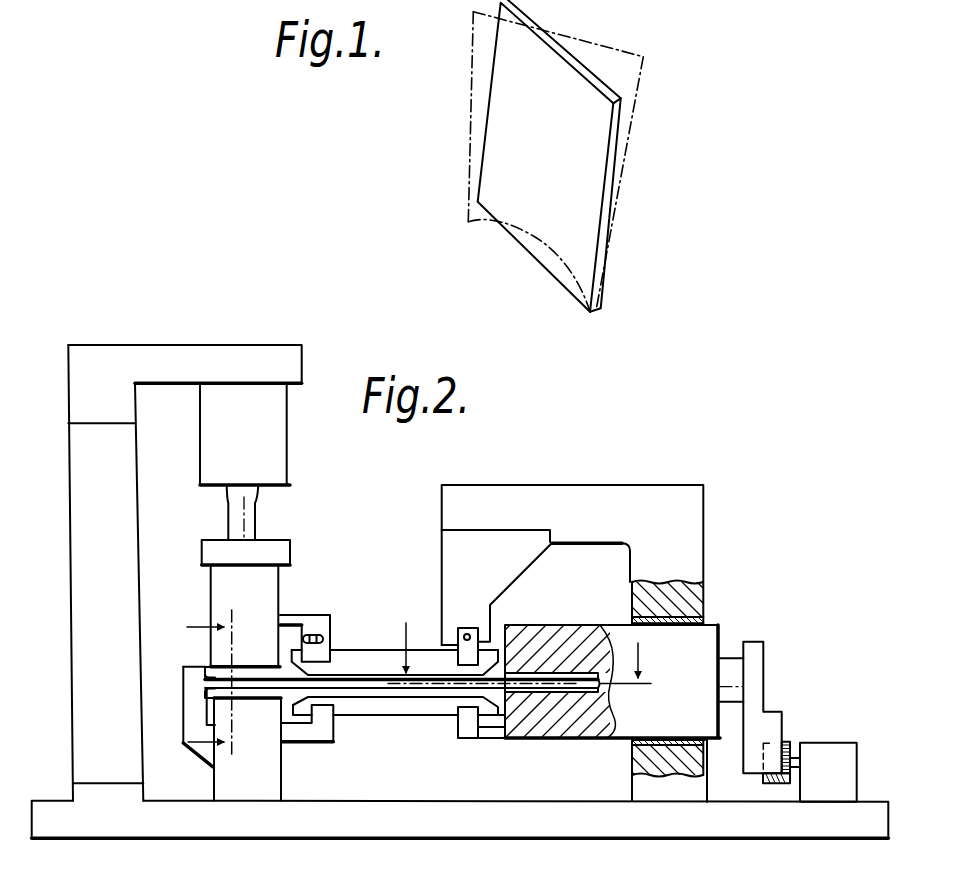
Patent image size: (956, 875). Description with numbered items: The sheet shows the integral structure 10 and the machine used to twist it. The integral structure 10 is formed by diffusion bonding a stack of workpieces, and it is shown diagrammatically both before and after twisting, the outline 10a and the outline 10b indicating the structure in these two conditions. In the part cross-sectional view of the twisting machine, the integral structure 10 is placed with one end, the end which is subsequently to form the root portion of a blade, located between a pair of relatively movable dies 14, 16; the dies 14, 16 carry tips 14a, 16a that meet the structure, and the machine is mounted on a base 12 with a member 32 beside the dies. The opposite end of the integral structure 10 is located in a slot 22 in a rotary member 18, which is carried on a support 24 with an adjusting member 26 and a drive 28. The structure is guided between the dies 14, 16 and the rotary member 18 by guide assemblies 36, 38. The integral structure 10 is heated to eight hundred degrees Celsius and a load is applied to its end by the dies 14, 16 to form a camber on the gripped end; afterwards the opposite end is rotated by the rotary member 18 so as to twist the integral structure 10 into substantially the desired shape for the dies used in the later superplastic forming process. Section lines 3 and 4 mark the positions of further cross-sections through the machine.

In FIG. 1, the integral structure 10 is at (562, 139).
In FIG. 1, the bent edge portion of plate 10a is at (535, 245).
In FIG. 1, the flexed position of plate 10b is at (477, 135).
In FIG. 2, the frame / base 12 is at (67, 792).
In FIG. 2, the die 14 is at (267, 773).
In FIG. 2, the lower clamping tip 14a is at (210, 693).
In FIG. 2, the die 16 is at (222, 580).
In FIG. 2, the upper clamping tip 16a is at (207, 670).
In FIG. 2, the rotary member 18 is at (688, 657).
In FIG. 2, the slot 22 is at (590, 670).
In FIG. 2, the bracket 24 is at (757, 657).
In FIG. 2, the adjusting screw 26 is at (783, 745).
In FIG. 2, the drive motor 28 is at (842, 778).
In FIG. 2, the stopper 32 is at (192, 717).
In FIG. 2, the lower guide roller assembly 36 is at (410, 706).
In FIG. 2, the upper guide roller assembly 38 is at (350, 653).
In FIG. 2, the section line III-III 3 is at (638, 650).
In FIG. 2, the section line IV-IV 4 is at (194, 684).